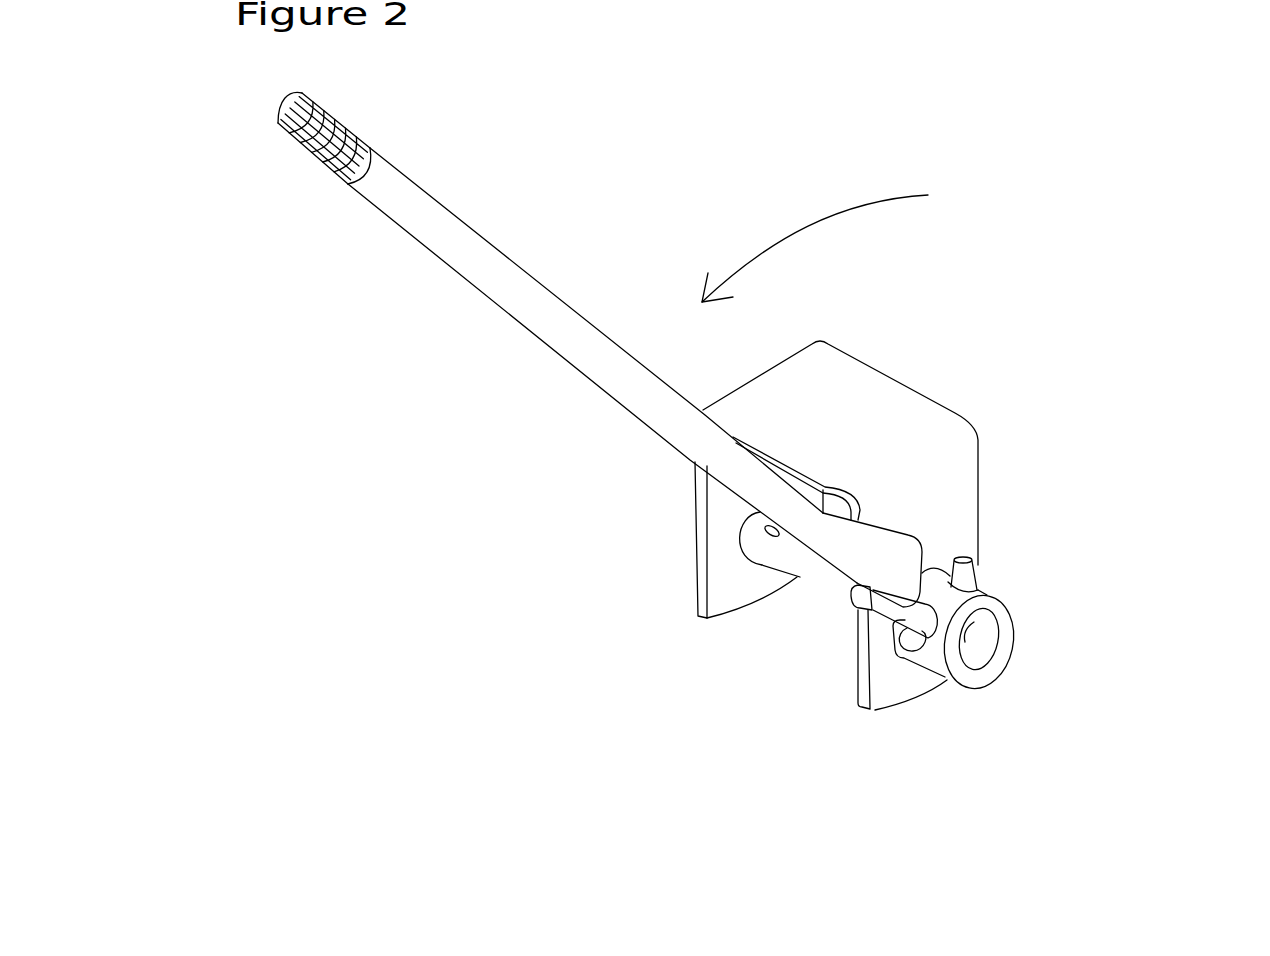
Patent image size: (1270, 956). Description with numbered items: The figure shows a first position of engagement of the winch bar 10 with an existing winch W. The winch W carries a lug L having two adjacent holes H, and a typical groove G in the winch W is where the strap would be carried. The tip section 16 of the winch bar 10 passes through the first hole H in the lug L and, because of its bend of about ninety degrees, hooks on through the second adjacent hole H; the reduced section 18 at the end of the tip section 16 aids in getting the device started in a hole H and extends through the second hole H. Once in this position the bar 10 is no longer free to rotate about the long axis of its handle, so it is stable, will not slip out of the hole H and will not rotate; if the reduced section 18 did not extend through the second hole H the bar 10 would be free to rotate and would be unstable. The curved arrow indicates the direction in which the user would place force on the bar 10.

The winch bar 10 is at (528, 297).
The winch W is at (958, 453).
The groove G is at (780, 537).
The lug L is at (1010, 629).
The reduced section 18 is at (973, 577).
The tip section 16 is at (873, 610).
The hole H is at (920, 640).